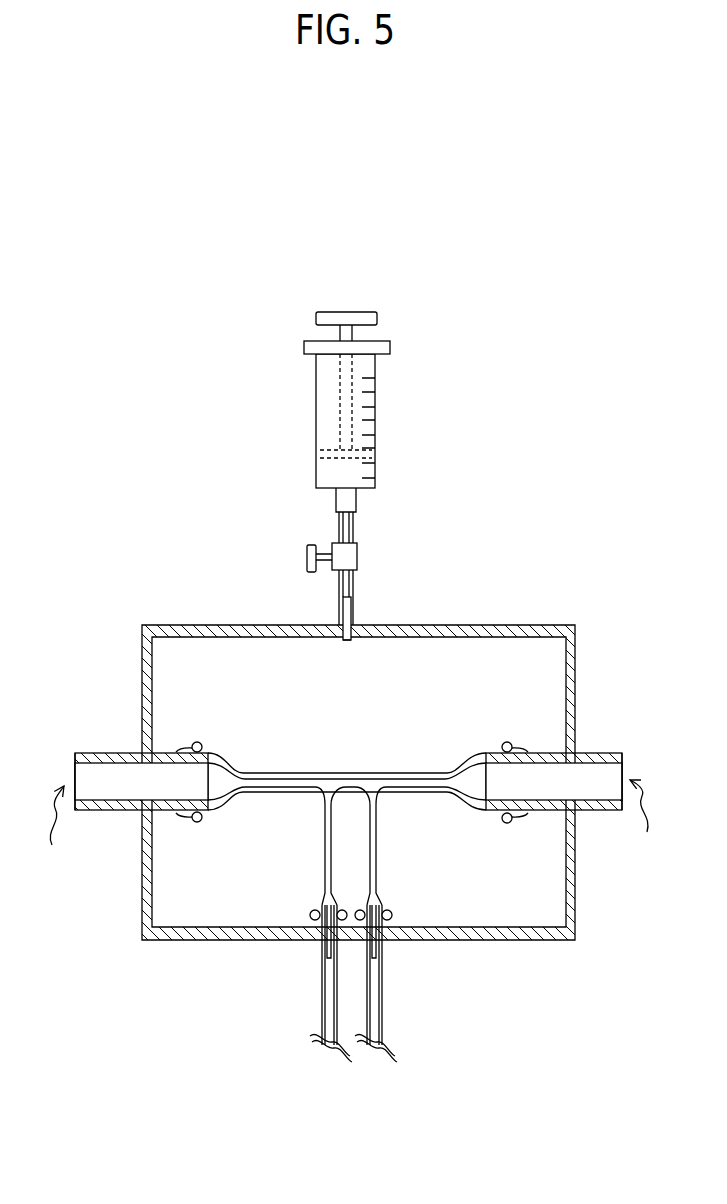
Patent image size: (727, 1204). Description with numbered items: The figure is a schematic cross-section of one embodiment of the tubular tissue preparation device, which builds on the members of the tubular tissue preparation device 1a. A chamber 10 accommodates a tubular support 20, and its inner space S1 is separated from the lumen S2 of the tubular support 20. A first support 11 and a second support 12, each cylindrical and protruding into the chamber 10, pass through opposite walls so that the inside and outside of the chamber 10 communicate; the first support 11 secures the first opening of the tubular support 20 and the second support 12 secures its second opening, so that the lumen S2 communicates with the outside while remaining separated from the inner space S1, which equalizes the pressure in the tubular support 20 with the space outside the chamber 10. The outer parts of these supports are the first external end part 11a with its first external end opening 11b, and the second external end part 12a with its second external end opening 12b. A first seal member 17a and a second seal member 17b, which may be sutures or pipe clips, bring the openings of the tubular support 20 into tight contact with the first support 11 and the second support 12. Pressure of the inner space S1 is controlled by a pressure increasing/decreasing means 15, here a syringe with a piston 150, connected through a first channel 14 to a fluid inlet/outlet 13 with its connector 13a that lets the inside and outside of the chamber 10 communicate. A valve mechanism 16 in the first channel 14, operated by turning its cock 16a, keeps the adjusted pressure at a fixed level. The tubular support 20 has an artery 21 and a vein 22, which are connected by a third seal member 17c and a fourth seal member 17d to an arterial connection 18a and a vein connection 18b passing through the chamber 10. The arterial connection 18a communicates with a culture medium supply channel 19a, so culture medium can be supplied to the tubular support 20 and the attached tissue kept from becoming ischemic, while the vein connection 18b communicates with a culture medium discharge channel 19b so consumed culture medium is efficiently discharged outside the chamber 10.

The tubular tissue preparation device 1a is at (590, 304).
The chamber 10 is at (174, 625).
The first support 11 is at (553, 752).
The first external end part 11a is at (615, 752).
The first external end opening 11b is at (646, 828).
The second support 12 is at (178, 752).
The second external end part 12a is at (104, 753).
The second external end opening 12b is at (49, 831).
The fluid inlet/outlet 13 is at (338, 644).
The connector 13a is at (340, 615).
The first channel 14 is at (354, 582).
The pressure increasing/decreasing means 15 is at (376, 366).
The piston 150 is at (362, 312).
The valve mechanism 16 is at (357, 556).
The cock 16a is at (313, 545).
The first seal member 17a is at (507, 824).
The second seal member 17b is at (198, 823).
The third seal member 17c is at (310, 913).
The fourth seal member 17d is at (393, 914).
The arterial connection 18a is at (322, 950).
The vein connection 18b is at (382, 950).
The culture medium supply channel 19a is at (322, 990).
The culture medium discharge channel 19b is at (382, 990).
The tubular support 20 is at (278, 773).
The artery 21 is at (325, 820).
The vein 22 is at (376, 820).
The inner space S1 is at (495, 656).
The lumen S2 is at (477, 786).